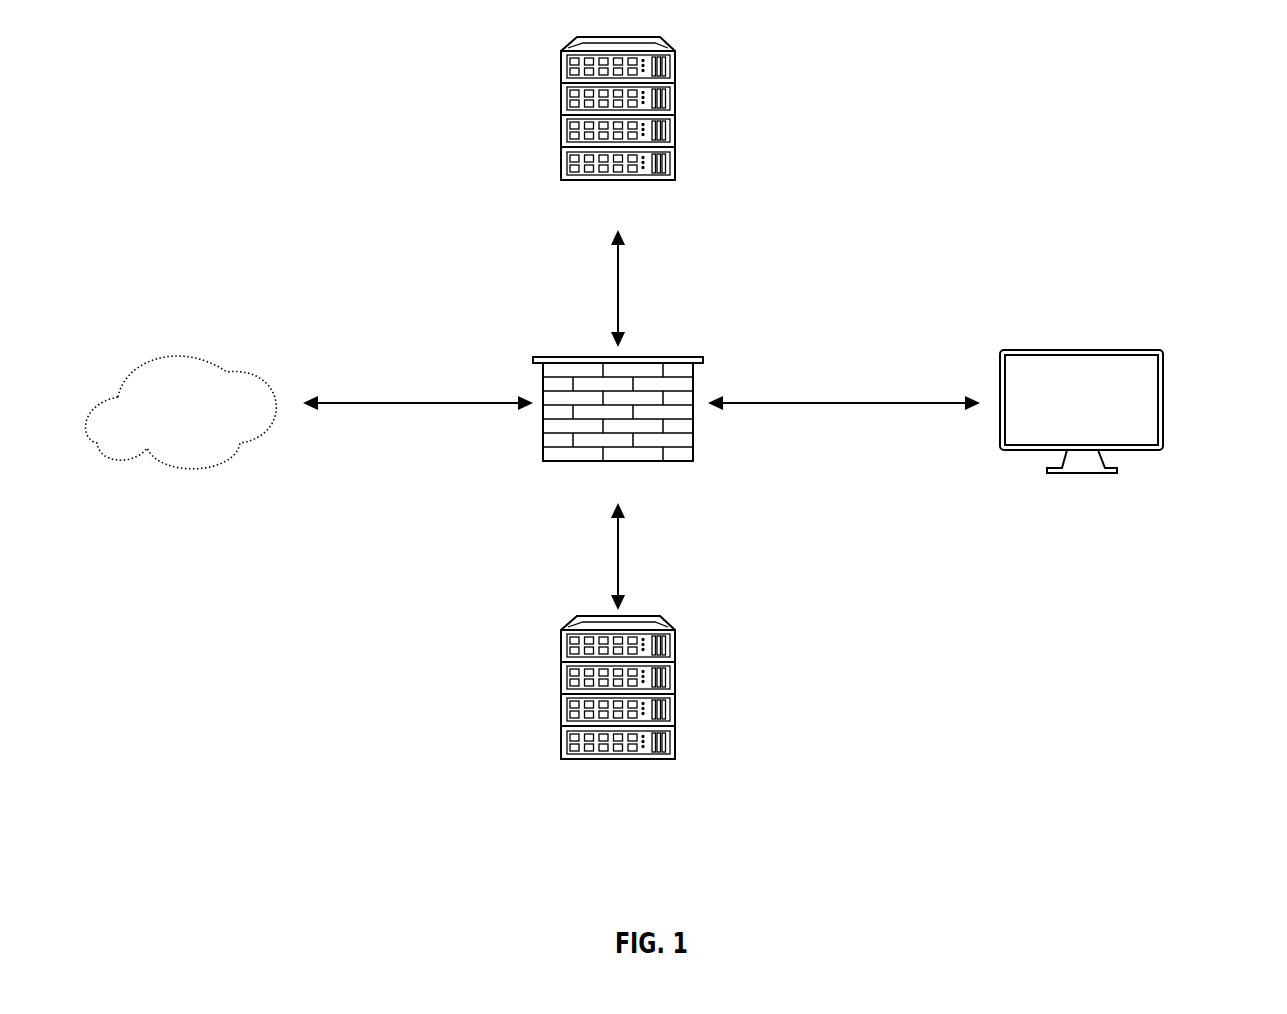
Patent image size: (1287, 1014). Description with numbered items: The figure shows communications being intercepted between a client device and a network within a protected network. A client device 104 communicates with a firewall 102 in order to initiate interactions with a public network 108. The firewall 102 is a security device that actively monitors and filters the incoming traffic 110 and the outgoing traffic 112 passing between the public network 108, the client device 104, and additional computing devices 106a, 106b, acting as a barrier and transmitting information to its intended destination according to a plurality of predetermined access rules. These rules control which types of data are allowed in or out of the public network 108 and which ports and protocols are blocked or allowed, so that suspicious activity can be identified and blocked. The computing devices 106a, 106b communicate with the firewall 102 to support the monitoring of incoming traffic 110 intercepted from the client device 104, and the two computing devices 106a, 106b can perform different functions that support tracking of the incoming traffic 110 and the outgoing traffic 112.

The firewall 102 is at (693, 437).
The client device 104 is at (1163, 410).
The computing device 106a is at (675, 110).
The computing device 106b is at (675, 689).
The public network 108 is at (118, 397).
The incoming traffic 110 is at (868, 400).
The outgoing traffic 112 is at (405, 400).